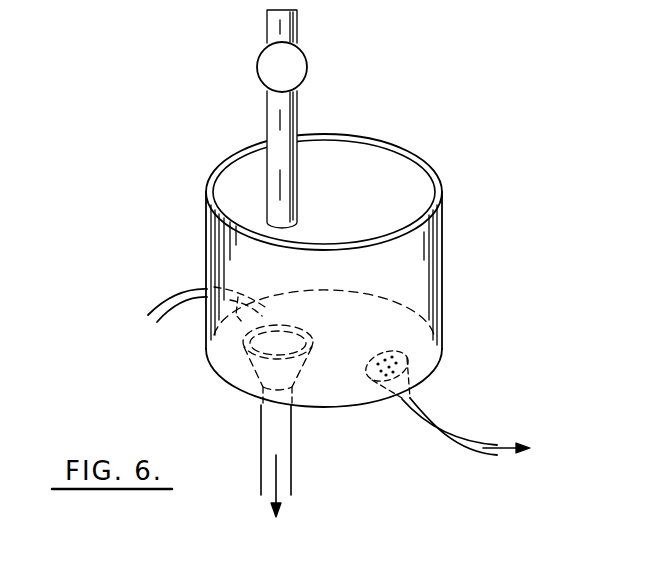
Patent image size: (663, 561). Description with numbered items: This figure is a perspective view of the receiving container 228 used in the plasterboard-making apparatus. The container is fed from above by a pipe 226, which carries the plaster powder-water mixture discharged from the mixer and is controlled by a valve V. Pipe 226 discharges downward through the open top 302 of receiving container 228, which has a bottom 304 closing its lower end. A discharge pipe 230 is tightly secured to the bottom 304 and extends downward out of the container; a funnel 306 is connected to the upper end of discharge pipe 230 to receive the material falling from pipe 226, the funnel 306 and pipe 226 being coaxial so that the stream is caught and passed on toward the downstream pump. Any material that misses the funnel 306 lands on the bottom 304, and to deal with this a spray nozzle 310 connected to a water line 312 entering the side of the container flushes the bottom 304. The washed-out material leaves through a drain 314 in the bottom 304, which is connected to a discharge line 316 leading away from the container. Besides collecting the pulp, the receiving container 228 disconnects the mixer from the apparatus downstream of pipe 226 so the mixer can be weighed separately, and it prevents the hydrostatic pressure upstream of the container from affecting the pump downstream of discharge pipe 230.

The pipe 226 is at (297, 26).
The valve V is at (300, 68).
The receiving container 228 is at (158, 182).
The open top 302 is at (437, 181).
The bottom 304 is at (407, 335).
The funnel 306 is at (312, 342).
The spray nozzle 310 is at (267, 308).
The water line 312 is at (168, 303).
The drain 314 is at (368, 367).
The discharge line 316 is at (452, 435).
The discharge pipe 230 is at (291, 452).